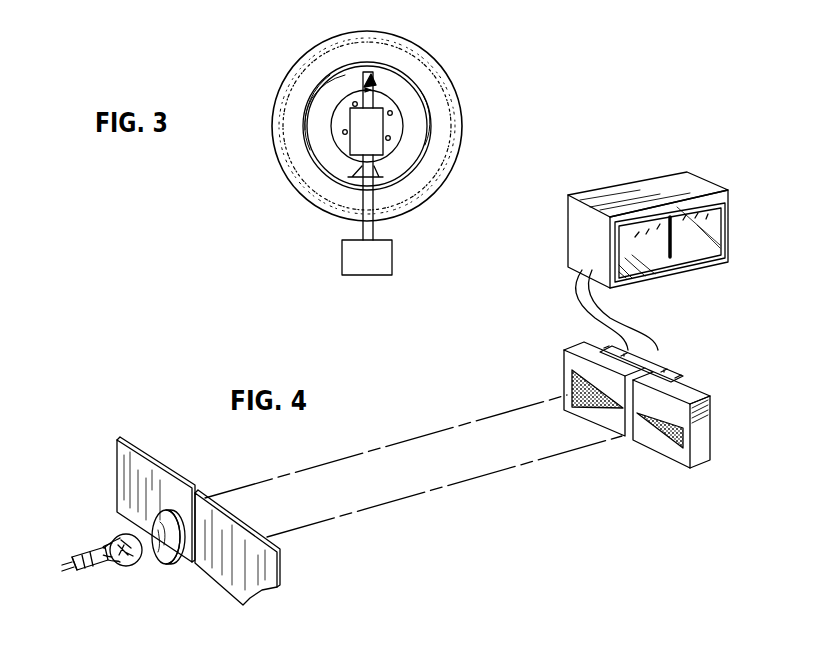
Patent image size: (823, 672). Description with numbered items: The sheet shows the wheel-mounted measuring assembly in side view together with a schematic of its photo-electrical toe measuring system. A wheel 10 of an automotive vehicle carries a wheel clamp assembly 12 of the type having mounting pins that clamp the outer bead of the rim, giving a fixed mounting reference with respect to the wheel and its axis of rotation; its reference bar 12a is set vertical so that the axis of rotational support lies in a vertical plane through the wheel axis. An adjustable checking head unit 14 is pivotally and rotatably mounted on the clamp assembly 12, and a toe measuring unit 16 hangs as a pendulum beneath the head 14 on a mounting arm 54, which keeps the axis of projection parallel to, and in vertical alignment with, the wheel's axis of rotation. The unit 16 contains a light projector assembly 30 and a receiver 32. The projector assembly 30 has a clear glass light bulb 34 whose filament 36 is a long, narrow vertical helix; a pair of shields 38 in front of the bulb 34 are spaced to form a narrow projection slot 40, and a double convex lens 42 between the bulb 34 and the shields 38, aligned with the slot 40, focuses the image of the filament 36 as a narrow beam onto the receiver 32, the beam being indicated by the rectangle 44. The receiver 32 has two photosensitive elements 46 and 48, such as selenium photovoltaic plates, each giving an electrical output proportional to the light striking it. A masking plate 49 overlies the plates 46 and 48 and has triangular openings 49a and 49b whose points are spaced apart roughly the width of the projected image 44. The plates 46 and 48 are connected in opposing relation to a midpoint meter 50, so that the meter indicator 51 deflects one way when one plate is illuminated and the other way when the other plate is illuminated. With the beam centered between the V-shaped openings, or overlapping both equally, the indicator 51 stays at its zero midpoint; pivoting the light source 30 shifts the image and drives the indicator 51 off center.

In FIG. 3, the wheel 10 is at (446, 60).
In FIG. 3, the wheel clamp assembly 12 is at (374, 76).
In FIG. 3, the reference bar 12a is at (366, 90).
In FIG. 3, the checking head unit 14 is at (357, 143).
In FIG. 3, the toe measuring unit 16 is at (394, 257).
In FIG. 3, the mounting arm 54 is at (374, 227).
In FIG. 4, the light projector assembly 30 is at (98, 464).
In FIG. 4, the light bulb 34 is at (115, 540).
In FIG. 4, the filament 36 is at (127, 565).
In FIG. 4, the shields 38 is at (150, 453).
In FIG. 4, the projection slot 40 is at (182, 493).
In FIG. 4, the double convex lens 42 is at (167, 560).
In FIG. 4, the receiver 32 is at (708, 384).
In FIG. 4, the projected light image 44 is at (628, 438).
In FIG. 4, the photosensitive element 46 is at (682, 434).
In FIG. 4, the photosensitive element 48 is at (572, 377).
In FIG. 4, the masking plate 49 is at (666, 450).
In FIG. 4, the triangular opening 49a is at (572, 397).
In FIG. 4, the triangular opening 49b is at (695, 423).
In FIG. 4, the midpoint meter 50 is at (710, 170).
In FIG. 4, the meter indicator 51 is at (672, 237).